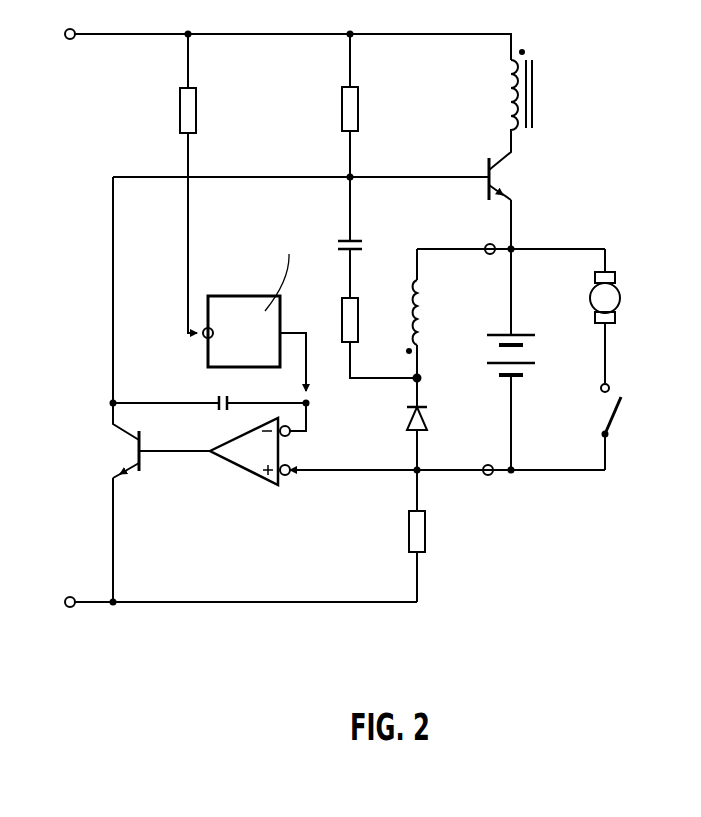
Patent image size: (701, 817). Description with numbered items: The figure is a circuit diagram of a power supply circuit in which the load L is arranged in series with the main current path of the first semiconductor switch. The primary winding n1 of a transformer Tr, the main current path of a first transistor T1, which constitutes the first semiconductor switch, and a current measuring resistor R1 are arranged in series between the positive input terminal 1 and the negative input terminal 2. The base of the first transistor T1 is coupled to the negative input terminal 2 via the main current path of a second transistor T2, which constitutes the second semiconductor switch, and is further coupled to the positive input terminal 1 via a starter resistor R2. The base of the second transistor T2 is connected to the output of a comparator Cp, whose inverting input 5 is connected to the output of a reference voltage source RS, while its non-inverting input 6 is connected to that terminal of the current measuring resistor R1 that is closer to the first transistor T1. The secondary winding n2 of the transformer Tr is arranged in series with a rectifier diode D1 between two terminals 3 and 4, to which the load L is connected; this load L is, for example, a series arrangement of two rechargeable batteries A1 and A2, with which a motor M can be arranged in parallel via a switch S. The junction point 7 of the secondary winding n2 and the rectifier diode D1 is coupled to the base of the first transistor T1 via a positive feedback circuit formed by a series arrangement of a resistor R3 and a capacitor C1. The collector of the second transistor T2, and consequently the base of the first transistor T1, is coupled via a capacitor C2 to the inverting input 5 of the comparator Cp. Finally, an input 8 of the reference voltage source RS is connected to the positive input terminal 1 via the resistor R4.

The positive input terminal 1 is at (80, 22).
The negative input terminal 2 is at (76, 594).
The terminal 3 is at (484, 258).
The terminal 4 is at (482, 479).
The inverting input 5 is at (280, 438).
The non-inverting input 6 is at (280, 477).
The junction point 7 is at (419, 377).
The input of the reference voltage source 8 is at (215, 323).
The current measuring resistor R1 is at (420, 532).
The starter resistor R2 is at (352, 108).
The resistor R3 is at (348, 320).
The resistor R4 is at (192, 110).
The capacitor C1 is at (360, 252).
The capacitor C2 is at (224, 414).
The comparator Cp is at (252, 466).
The first transistor T1 is at (495, 176).
The second transistor T2 is at (134, 450).
The transformer Tr is at (490, 175).
The primary winding n1 is at (522, 101).
The secondary winding n2 is at (416, 305).
The rechargeable battery A1 is at (528, 341).
The rechargeable battery A2 is at (524, 370).
The rectifier diode D1 is at (422, 420).
The motor M is at (605, 297).
The load L is at (588, 352).
The switch S is at (614, 416).
The reference voltage source RS is at (216, 360).